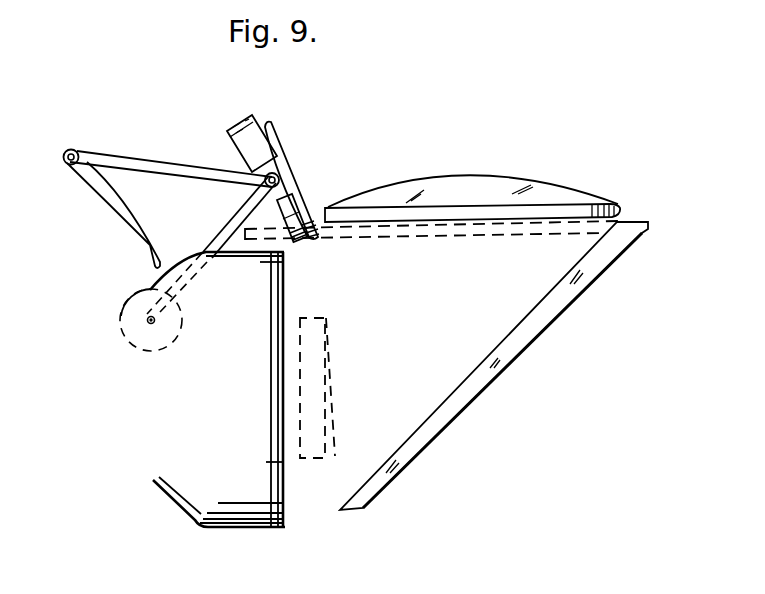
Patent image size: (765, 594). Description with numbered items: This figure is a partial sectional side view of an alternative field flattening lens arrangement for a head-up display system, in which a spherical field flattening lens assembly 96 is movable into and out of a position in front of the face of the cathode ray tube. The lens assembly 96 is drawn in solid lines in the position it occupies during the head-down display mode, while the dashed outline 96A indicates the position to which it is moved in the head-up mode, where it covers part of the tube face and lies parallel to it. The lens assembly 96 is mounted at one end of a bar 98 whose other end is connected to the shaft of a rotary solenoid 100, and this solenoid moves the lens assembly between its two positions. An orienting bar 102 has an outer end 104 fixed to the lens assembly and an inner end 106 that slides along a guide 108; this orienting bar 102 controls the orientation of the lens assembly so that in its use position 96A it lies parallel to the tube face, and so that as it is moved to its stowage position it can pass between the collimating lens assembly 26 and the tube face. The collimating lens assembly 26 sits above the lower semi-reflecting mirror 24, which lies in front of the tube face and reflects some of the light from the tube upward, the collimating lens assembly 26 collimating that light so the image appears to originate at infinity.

The lower semi-reflecting mirror 24 is at (522, 334).
The collimating lens assembly 26 is at (567, 200).
The field flattening lens assembly 96 is at (288, 181).
The use position of the lens assembly 96A is at (334, 360).
The bar 98 is at (240, 218).
The rotary solenoid 100 is at (150, 290).
The orienting bar 102 is at (160, 164).
The outer end of orienting bar 104 is at (266, 137).
The inner end of orienting bar 106 is at (76, 150).
The guide 108 is at (111, 197).